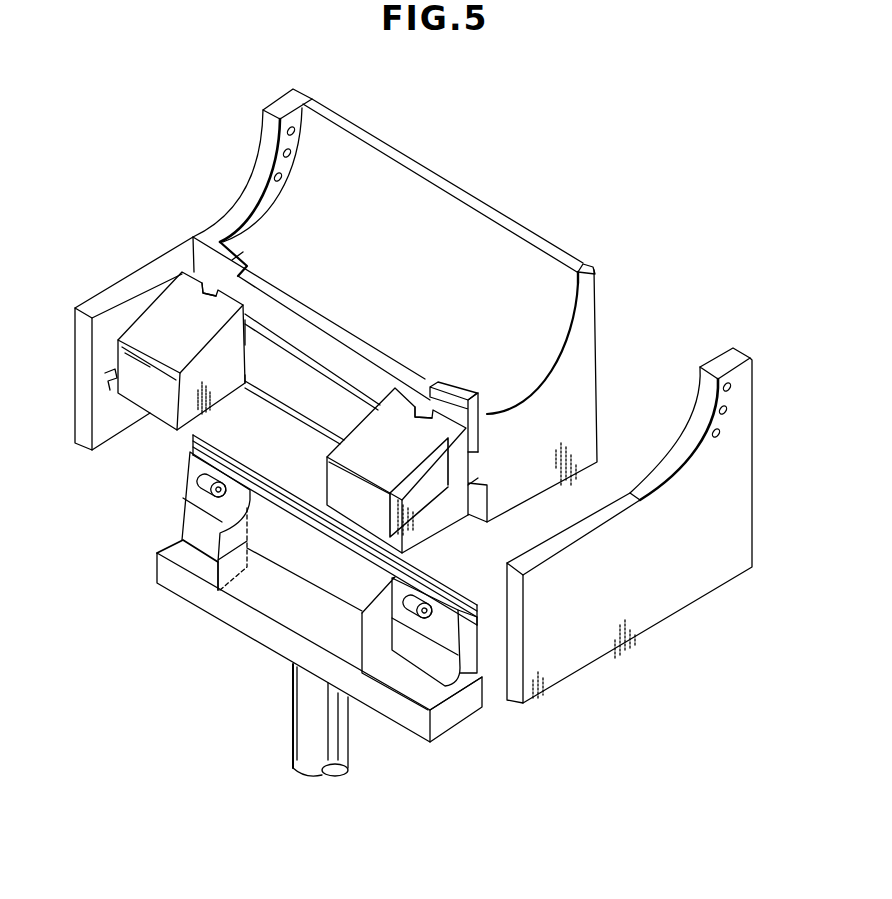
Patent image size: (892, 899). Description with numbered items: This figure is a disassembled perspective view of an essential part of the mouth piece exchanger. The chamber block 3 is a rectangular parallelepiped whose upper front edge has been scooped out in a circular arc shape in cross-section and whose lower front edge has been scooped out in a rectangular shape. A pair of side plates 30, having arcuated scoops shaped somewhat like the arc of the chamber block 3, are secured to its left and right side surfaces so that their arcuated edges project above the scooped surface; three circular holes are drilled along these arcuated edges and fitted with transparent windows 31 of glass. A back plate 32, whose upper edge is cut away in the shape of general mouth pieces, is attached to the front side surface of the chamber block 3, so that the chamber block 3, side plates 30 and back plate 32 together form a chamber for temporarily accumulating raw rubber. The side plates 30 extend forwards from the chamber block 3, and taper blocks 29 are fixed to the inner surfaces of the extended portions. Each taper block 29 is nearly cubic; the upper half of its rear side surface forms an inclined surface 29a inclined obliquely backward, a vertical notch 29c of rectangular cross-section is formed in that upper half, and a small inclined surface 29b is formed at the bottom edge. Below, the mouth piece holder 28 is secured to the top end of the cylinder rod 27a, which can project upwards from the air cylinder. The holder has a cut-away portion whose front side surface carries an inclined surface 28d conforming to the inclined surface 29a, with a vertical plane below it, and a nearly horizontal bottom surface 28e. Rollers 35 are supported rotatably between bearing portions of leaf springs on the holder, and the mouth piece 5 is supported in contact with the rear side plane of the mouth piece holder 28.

The chamber block 3 is at (490, 205).
The mouth piece 5 is at (287, 492).
The cylinder rod 27a is at (307, 721).
The mouth piece holder 28 is at (272, 592).
The inclined surface 28d is at (193, 482).
The bottom surface 28e is at (177, 557).
The taper block 29 is at (153, 318).
The inclined surface 29a is at (245, 330).
The small inclined surface 29b is at (245, 385).
The notch 29c is at (213, 284).
The side plate 30 is at (82, 318).
The transparent window 31 is at (283, 178).
The back plate 32 is at (350, 333).
The roller 35 is at (214, 482).